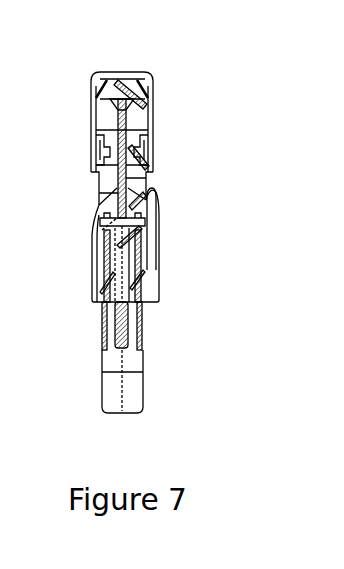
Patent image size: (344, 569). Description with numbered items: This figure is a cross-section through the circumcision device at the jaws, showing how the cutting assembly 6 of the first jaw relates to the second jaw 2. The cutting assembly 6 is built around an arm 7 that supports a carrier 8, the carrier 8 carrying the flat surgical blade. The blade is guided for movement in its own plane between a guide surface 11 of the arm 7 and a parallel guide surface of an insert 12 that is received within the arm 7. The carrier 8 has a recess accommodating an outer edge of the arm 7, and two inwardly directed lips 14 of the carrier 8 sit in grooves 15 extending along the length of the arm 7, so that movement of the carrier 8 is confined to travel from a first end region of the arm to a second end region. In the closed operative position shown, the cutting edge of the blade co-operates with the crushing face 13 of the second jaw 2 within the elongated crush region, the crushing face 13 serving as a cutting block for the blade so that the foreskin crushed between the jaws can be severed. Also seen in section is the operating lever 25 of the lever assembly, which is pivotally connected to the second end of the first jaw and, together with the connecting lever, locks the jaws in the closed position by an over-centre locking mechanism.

The cutting assembly 6 is at (128, 68).
The carrier 8 is at (156, 122).
The arm 7 is at (152, 165).
The inwardly directed lips 14 is at (153, 142).
The grooves 15 is at (92, 147).
The guide surface 11 is at (148, 178).
The insert 12 is at (100, 190).
The crushing face 13 is at (160, 238).
The second jaw 2 is at (83, 252).
The operating lever 25 is at (112, 383).